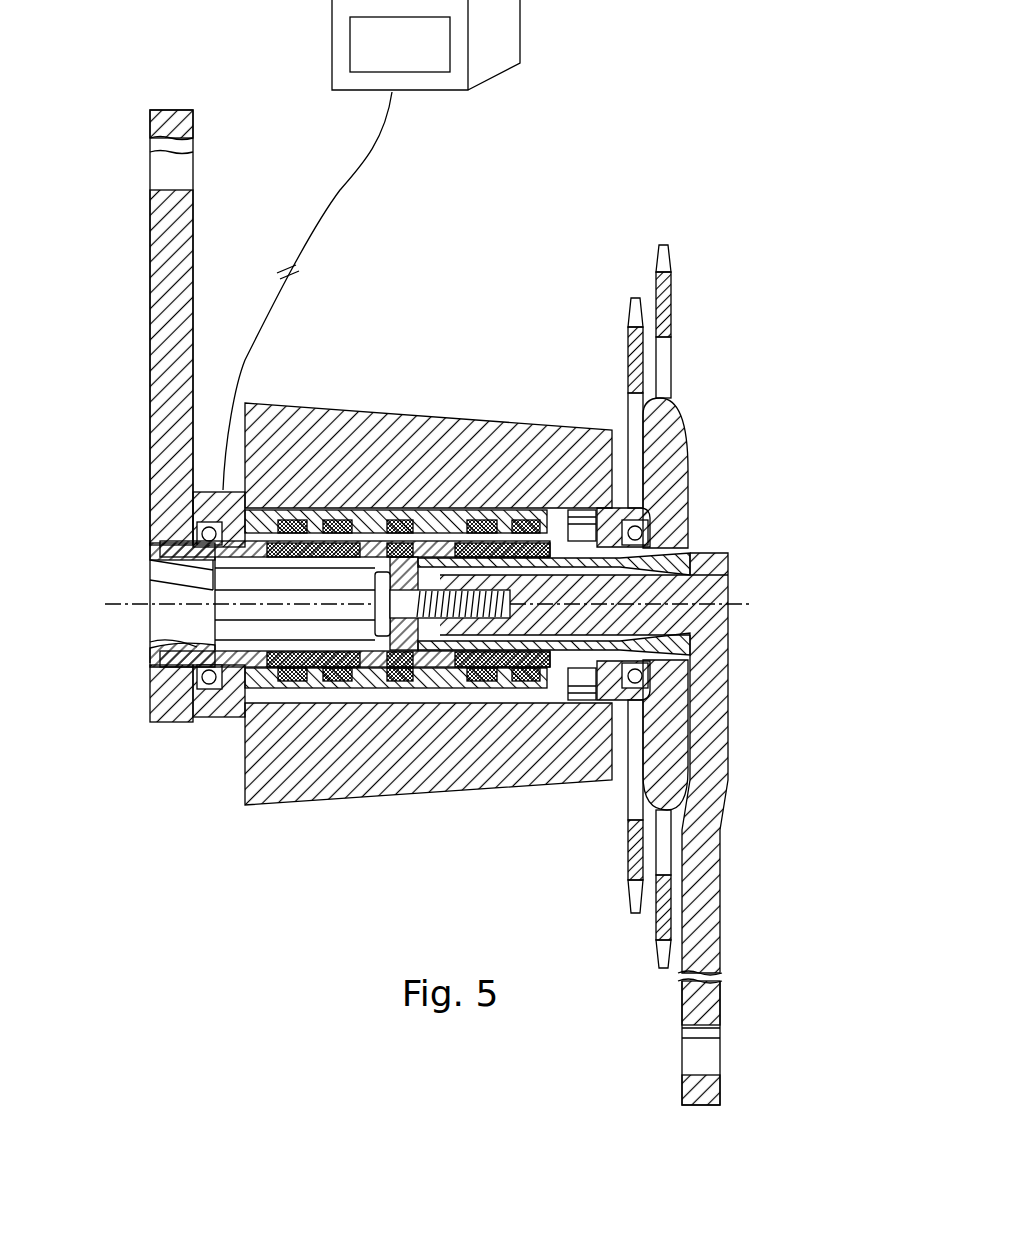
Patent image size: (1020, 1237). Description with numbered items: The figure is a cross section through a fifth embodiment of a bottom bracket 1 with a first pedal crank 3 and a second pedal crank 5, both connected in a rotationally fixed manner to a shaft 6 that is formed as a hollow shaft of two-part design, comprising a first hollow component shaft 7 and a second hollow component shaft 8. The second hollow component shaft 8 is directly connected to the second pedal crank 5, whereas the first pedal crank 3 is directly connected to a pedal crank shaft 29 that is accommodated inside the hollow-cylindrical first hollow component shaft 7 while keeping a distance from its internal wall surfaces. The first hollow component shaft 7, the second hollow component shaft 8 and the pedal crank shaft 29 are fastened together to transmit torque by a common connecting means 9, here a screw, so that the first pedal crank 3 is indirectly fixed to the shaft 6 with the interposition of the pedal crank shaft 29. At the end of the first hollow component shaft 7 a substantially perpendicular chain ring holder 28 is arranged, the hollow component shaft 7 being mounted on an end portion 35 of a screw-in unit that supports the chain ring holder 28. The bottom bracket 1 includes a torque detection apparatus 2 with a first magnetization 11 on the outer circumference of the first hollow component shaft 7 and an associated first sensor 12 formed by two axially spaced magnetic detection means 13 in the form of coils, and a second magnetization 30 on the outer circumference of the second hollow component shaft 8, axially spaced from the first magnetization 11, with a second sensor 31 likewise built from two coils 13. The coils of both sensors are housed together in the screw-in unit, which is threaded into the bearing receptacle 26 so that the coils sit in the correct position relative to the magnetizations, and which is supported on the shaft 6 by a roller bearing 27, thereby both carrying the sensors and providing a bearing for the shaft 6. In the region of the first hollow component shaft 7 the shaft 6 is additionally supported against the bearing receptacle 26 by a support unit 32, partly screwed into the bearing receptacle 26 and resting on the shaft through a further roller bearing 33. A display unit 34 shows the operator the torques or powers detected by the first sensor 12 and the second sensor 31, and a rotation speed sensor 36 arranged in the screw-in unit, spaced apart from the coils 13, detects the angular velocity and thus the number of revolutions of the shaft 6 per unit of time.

The bottom bracket 1 is at (572, 196).
The torque detection apparatus 2 is at (411, 589).
The first pedal crank 3 is at (700, 871).
The second pedal crank 5 is at (168, 332).
The shaft 6 is at (182, 641).
The first hollow component shaft 7 is at (581, 690).
The second hollow component shaft 8 is at (391, 652).
The connecting means 9 is at (374, 605).
The first magnetization 11 is at (521, 662).
The first sensor 12 is at (503, 511).
The magnetic detection means 13 is at (340, 518).
The bearing receptacle 26 is at (493, 447).
The roller bearing 27 is at (150, 560).
The chain ring holder 28 is at (686, 446).
The pedal crank shaft 29 is at (730, 590).
The second magnetization 30 is at (322, 667).
The second sensor 31 is at (313, 511).
The support unit 32 is at (645, 506).
The further roller bearing 33 is at (647, 528).
The display unit 34 is at (505, 33).
The end portion 35 is at (438, 522).
The rotation speed sensor 36 is at (397, 513).